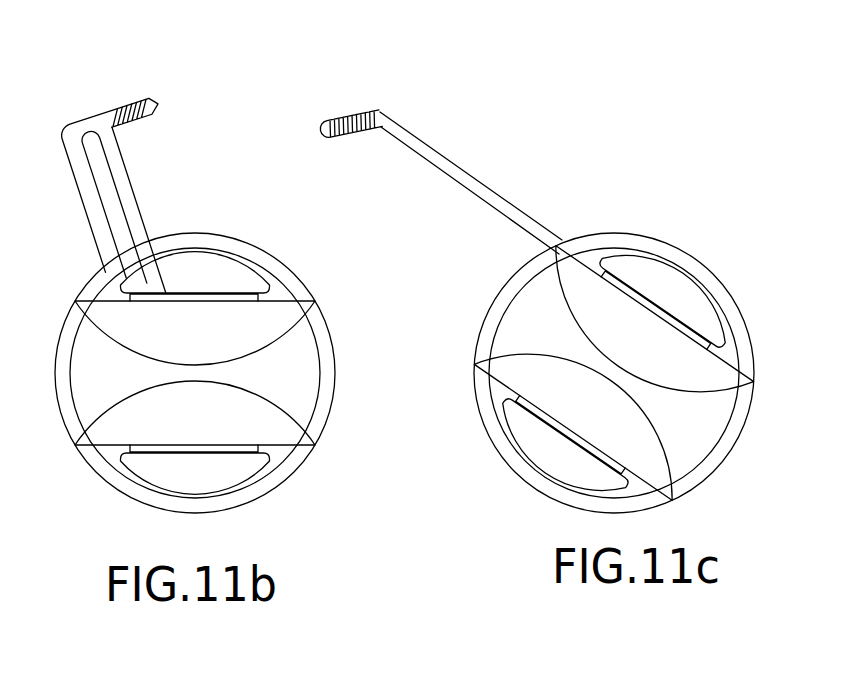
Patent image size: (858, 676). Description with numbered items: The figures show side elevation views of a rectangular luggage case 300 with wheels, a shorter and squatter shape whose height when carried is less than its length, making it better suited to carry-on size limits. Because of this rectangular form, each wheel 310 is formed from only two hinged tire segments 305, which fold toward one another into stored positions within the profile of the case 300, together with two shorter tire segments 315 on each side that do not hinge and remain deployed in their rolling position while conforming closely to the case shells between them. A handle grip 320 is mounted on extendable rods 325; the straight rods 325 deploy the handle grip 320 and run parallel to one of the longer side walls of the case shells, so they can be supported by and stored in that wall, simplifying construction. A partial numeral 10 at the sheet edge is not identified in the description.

In FIG. 11B, the luggage case 300 is at (209, 305).
In FIG. 11C, the luggage case 300 is at (582, 288).
In FIG. 11B, the tire segments 305 is at (173, 512).
In FIG. 11C, the tire segments 305 is at (493, 445).
In FIG. 11B, the wheel 310 is at (58, 292).
In FIG. 11C, the wheel 310 is at (771, 352).
In FIG. 11B, the shorter tire segments 315 is at (332, 413).
In FIG. 11C, the shorter tire segments 315 is at (733, 450).
In FIG. 11B, the handle grip 320 is at (122, 105).
In FIG. 11C, the handle grip 320 is at (350, 110).
In FIG. 11B, the extendable rods 325 is at (128, 178).
In FIG. 11C, the extendable rods 325 is at (477, 179).
In FIG. 11B, the truncated numeral at sheet edge 10 is at (9, 432).